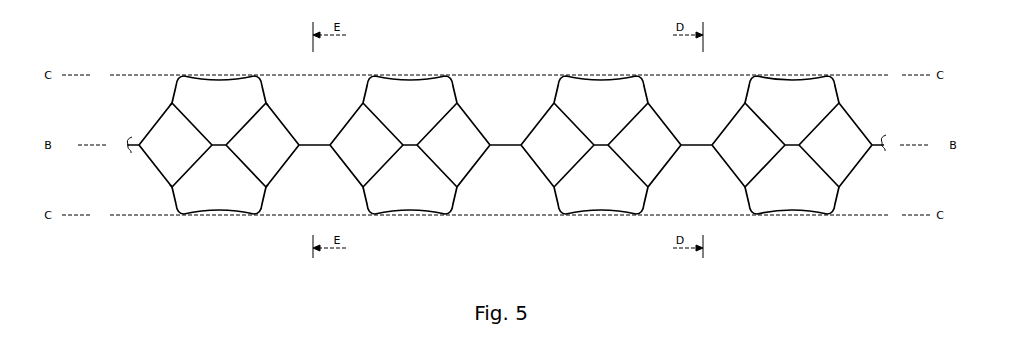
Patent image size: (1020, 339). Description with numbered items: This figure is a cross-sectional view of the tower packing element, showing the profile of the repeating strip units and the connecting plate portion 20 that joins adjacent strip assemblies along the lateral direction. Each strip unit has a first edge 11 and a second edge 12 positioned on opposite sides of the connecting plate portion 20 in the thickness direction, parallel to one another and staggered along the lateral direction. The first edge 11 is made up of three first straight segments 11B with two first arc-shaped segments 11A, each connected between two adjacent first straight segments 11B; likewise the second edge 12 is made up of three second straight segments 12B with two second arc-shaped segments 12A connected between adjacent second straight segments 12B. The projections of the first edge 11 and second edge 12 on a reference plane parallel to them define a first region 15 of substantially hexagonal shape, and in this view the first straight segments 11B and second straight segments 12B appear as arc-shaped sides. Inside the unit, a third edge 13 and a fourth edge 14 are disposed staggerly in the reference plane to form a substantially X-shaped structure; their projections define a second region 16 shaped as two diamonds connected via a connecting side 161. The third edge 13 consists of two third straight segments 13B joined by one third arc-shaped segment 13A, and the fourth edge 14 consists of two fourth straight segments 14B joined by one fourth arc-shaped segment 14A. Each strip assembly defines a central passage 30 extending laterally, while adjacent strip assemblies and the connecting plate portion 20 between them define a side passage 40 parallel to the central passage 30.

The first edge 11 is at (790, 80).
The first arc-shaped segment 11A is at (188, 73).
The first straight segment 11B is at (226, 78).
The second edge 12 is at (772, 215).
The second arc-shaped segment 12A is at (182, 216).
The second straight segment 12B is at (169, 195).
The third edge 13 is at (762, 117).
The third arc-shaped segment 13A is at (173, 103).
The third straight segment 13B is at (197, 123).
The fourth edge 14 is at (822, 118).
The fourth arc-shaped segment 14A is at (264, 102).
The fourth straight segment 14B is at (247, 123).
The first region 15 is at (567, 179).
The second region 16 is at (410, 127).
The connecting side 161 is at (220, 148).
The connecting plate portion 20 is at (137, 142).
The central passage 30 is at (423, 97).
The side passage 40 is at (503, 95).